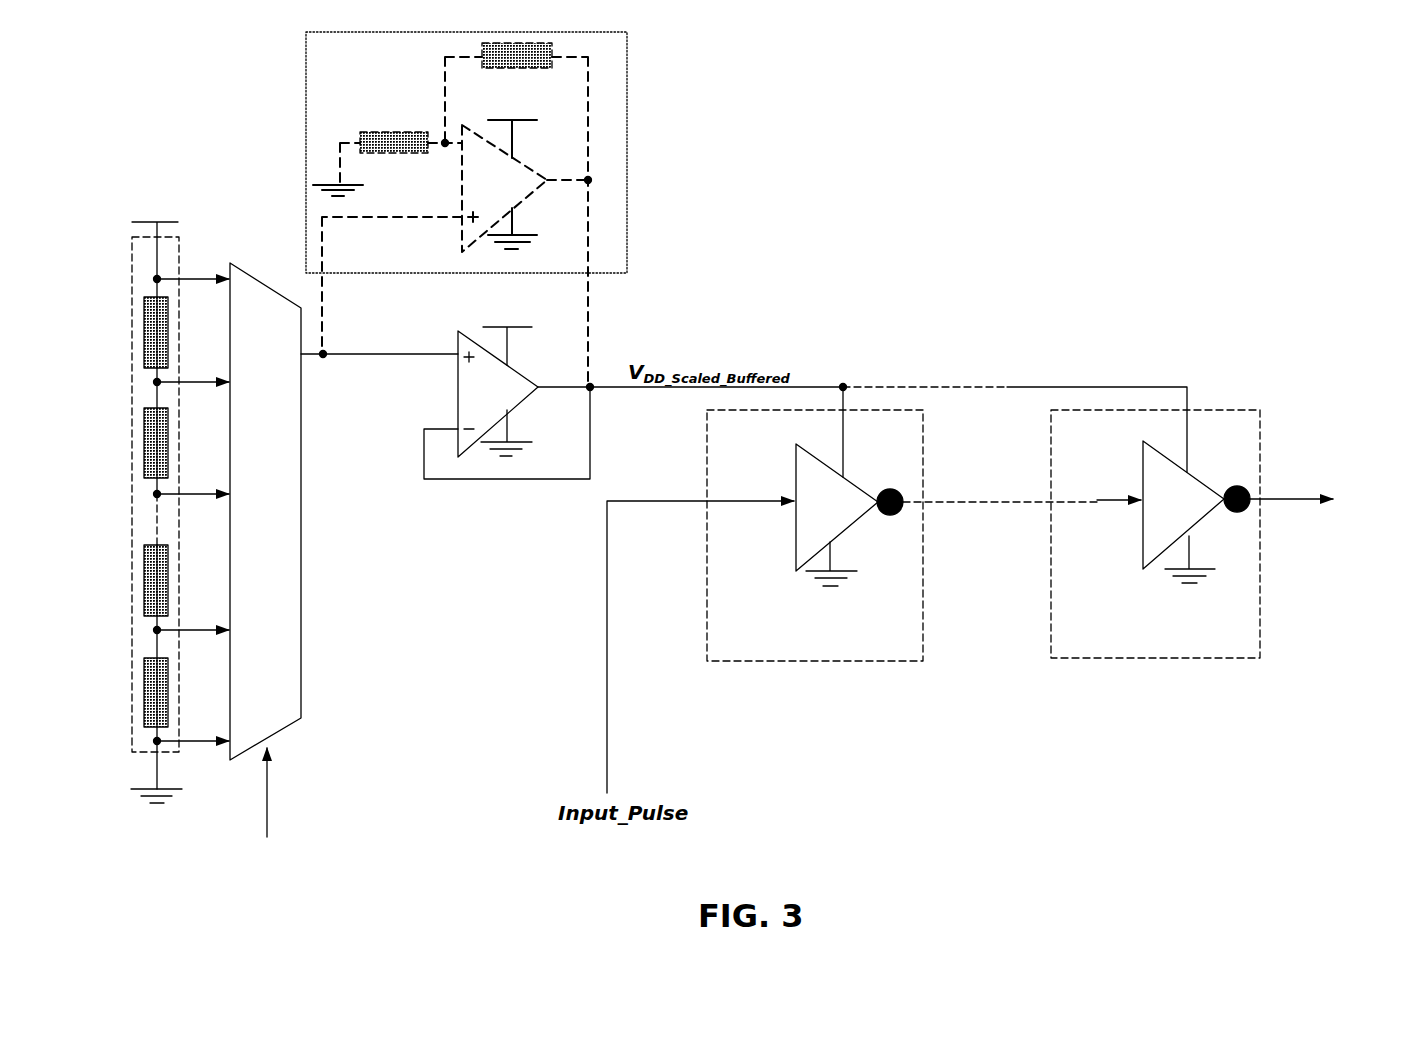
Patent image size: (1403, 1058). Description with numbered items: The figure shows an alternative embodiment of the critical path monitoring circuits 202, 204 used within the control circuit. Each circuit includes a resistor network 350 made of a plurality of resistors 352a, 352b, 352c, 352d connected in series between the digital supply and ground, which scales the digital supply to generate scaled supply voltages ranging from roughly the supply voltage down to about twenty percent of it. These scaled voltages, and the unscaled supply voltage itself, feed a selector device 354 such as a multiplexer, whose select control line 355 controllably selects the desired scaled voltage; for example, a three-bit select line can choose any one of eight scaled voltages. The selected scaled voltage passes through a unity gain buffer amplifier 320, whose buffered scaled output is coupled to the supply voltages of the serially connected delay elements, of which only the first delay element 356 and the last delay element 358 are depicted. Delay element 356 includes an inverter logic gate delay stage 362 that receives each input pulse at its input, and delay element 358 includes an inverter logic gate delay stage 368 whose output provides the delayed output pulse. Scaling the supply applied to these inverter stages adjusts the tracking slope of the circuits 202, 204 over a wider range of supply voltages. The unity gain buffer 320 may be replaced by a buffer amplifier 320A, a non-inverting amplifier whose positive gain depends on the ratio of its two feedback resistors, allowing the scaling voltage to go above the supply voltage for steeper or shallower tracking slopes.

The critical path monitoring (CPM) circuit 202 is at (212, 455).
The critical path monitoring (CPM) circuit 204 is at (243, 210).
The unity gain buffer amplifier 320 is at (503, 398).
The buffer amplifier 320A is at (630, 114).
The resistor network 350 is at (122, 252).
The resistor 352a is at (158, 320).
The resistor 352b is at (158, 425).
The resistor 352c is at (158, 590).
The resistor 352d is at (158, 700).
The selector device 354 is at (340, 566).
The select control line 355 is at (402, 855).
The delay element 356 is at (736, 667).
The delay element 358 is at (1091, 662).
The inverter logic gate delay stage 362 is at (808, 483).
The inverter logic gate delay stage 368 is at (1153, 478).